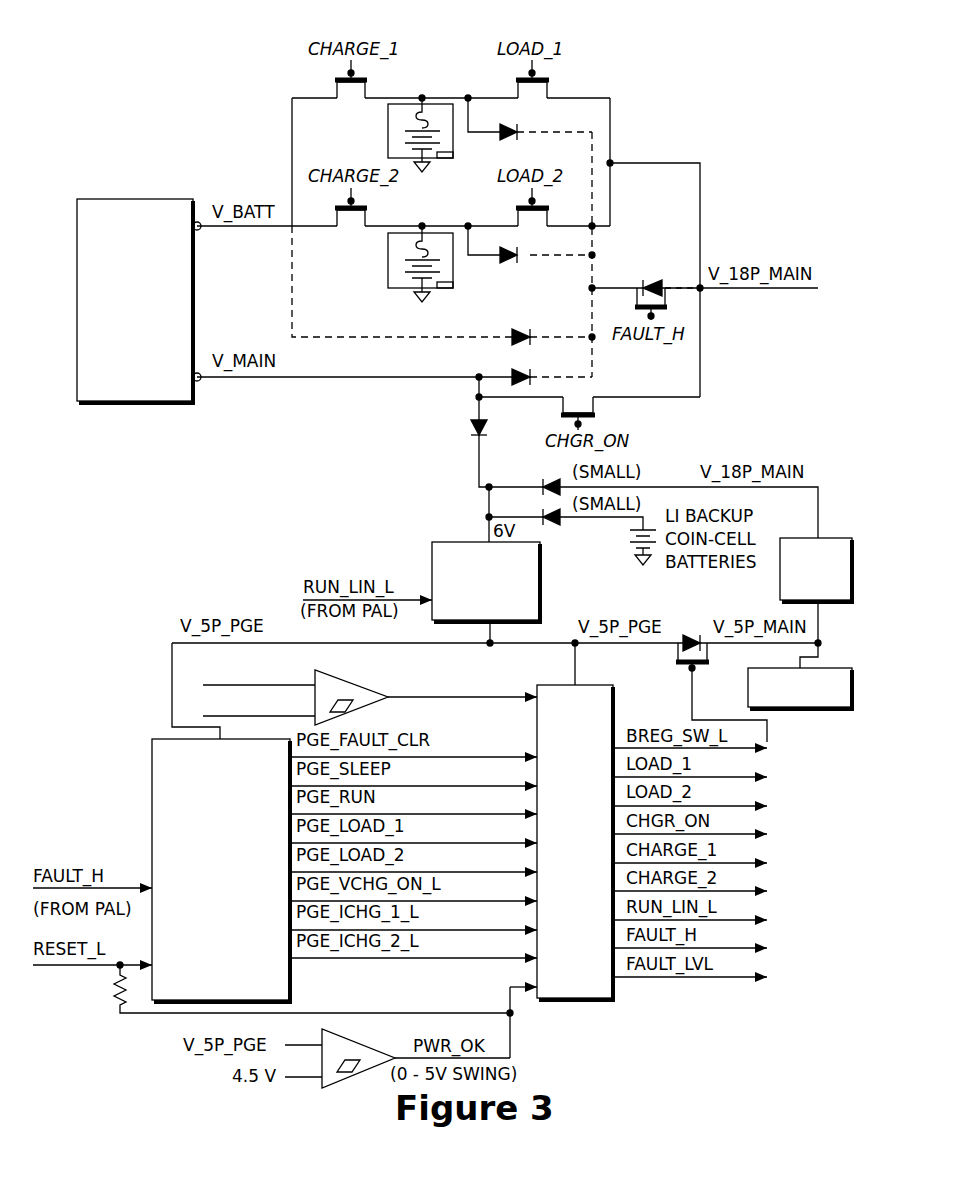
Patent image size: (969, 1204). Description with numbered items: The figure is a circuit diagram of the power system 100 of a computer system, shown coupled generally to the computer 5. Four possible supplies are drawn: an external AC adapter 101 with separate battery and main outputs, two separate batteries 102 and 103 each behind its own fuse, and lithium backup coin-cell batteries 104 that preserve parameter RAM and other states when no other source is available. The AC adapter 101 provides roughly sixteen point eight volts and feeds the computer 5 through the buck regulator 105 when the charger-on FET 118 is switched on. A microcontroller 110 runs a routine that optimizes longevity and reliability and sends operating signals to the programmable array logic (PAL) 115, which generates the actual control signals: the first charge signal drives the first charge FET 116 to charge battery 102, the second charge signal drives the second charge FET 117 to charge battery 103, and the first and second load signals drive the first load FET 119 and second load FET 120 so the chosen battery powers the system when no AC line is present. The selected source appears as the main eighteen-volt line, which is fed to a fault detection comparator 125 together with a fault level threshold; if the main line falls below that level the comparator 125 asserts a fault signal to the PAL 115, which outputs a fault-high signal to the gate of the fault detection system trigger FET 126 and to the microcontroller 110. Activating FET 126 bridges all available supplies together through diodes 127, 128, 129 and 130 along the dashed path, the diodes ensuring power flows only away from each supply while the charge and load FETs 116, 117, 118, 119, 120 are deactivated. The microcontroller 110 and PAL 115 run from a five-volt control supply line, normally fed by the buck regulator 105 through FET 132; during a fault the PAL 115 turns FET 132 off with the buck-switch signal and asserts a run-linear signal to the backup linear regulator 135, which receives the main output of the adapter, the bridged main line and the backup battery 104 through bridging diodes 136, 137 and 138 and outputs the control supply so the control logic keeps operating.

The power system 100 is at (172, 73).
The external AC adapter 101 is at (132, 199).
The battery 102 is at (388, 126).
The battery 103 is at (388, 278).
The lithium backup coin-cell batteries 104 is at (640, 565).
The buck regulator 105 is at (830, 538).
The computer 5 is at (830, 668).
The microcontroller 110 is at (152, 765).
The programmable array logic (PAL) 115 is at (575, 1002).
The CHARGE_1 FET 116 is at (368, 85).
The CHARGE_2 FET 117 is at (368, 213).
The CHGR_ON FET 118 is at (595, 405).
The LOAD_1 FET 119 is at (550, 85).
The LOAD_2 FET 120 is at (560, 210).
The fault detection comparator 125 is at (336, 674).
The fault detection system trigger FET 126 is at (655, 280).
The diode 127 is at (517, 140).
The diode 128 is at (517, 263).
The diode 129 is at (530, 329).
The diode 130 is at (530, 371).
The FET 132 is at (688, 635).
The linear regulator 135 is at (540, 606).
The bridging diode 136 is at (470, 428).
The bridging diode 137 is at (543, 480).
The bridging diode 138 is at (543, 525).